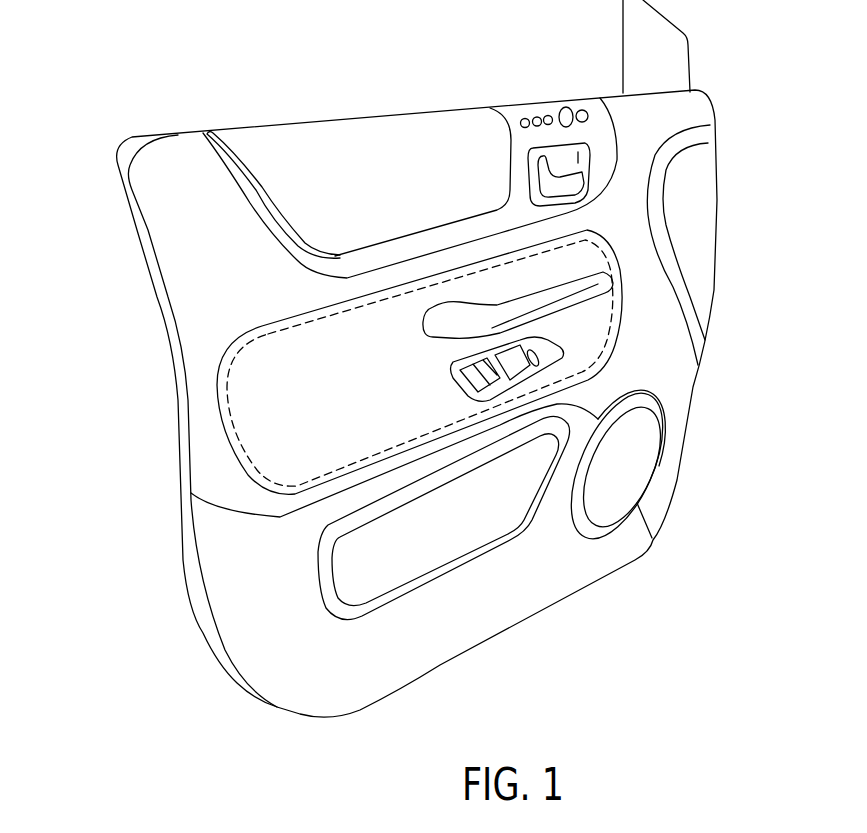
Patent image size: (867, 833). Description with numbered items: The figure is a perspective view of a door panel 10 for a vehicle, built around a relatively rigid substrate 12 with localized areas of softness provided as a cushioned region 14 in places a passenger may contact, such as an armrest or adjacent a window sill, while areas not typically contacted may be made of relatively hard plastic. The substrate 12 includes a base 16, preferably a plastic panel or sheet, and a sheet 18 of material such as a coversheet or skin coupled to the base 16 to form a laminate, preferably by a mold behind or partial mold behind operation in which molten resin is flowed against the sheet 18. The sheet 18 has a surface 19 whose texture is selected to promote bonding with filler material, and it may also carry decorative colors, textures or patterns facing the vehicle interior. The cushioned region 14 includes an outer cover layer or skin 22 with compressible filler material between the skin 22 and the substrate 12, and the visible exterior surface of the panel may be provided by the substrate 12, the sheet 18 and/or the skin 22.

The door panel 10 is at (100, 128).
The substrate 12 is at (146, 345).
The cushioned region 14 is at (453, 138).
The base 16 is at (200, 262).
The sheet 18 is at (253, 390).
The surface 19 is at (383, 191).
The skin 22 is at (320, 140).